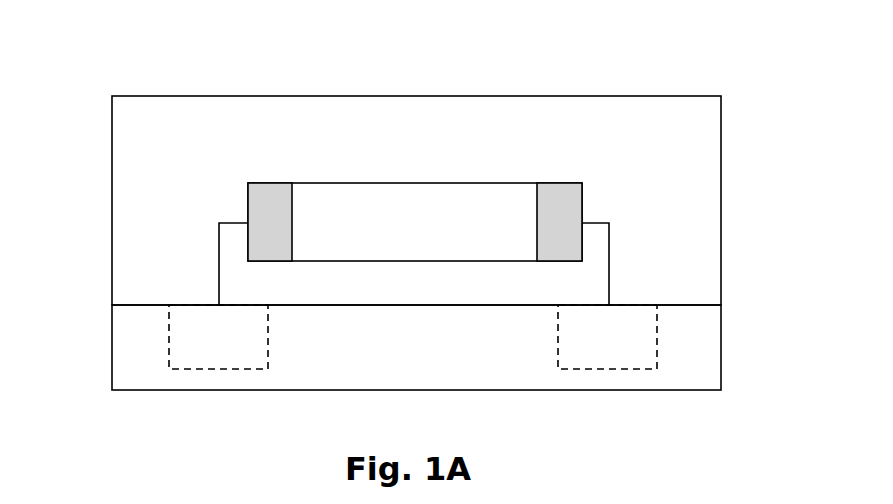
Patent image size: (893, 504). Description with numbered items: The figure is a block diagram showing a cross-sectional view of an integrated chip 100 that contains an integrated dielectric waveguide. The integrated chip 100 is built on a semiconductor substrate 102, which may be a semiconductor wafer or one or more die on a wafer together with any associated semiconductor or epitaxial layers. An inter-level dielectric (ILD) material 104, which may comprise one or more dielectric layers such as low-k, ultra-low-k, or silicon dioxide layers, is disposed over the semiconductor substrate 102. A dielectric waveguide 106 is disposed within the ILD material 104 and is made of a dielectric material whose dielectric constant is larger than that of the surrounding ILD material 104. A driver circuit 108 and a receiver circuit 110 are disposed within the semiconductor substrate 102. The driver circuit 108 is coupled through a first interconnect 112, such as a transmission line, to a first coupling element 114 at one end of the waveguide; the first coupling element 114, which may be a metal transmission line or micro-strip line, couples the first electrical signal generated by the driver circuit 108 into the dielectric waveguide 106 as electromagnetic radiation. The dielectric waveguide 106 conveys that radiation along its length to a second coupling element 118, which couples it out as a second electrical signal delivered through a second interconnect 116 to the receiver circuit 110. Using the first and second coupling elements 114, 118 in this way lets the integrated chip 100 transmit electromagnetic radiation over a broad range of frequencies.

The integrated chip 100 is at (97, 41).
The semiconductor substrate 102 is at (721, 345).
The inter-level dielectric (ILD) material 104 is at (721, 207).
The dielectric waveguide 106 is at (415, 183).
The driver circuit 108 is at (218, 337).
The receiver circuit 110 is at (607, 337).
The first interconnect 112 is at (231, 222).
The first coupling element 114 is at (271, 183).
The second interconnect 116 is at (599, 223).
The second coupling element 118 is at (559, 183).